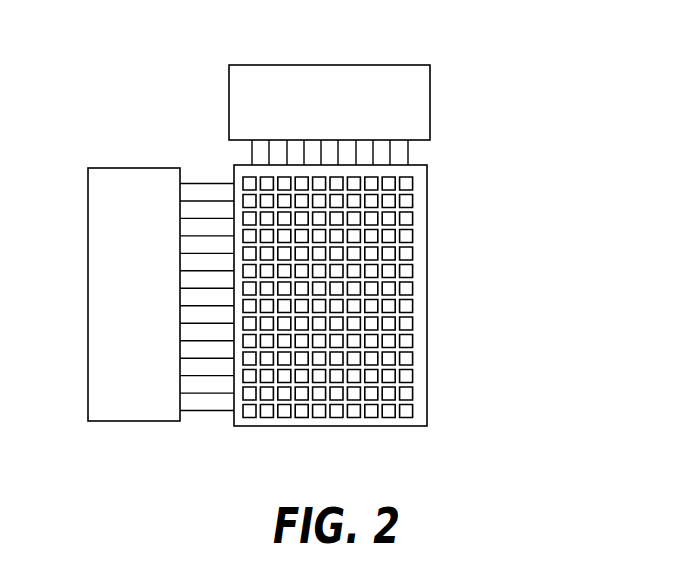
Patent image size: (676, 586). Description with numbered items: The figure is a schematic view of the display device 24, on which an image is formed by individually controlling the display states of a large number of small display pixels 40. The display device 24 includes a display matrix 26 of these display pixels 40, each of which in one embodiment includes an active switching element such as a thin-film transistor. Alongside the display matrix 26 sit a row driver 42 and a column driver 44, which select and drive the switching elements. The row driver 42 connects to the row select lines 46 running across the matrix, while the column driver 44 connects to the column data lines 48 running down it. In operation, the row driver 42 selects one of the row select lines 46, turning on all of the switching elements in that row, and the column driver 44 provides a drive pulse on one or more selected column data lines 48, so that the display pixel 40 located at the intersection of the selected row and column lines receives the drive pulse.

The display device 24 is at (142, 67).
The display matrix 26 is at (427, 304).
The display pixel 40 is at (300, 412).
The row driver 42 is at (127, 168).
The column driver 44 is at (415, 65).
The row select lines 46 is at (213, 182).
The column data lines 48 is at (410, 152).